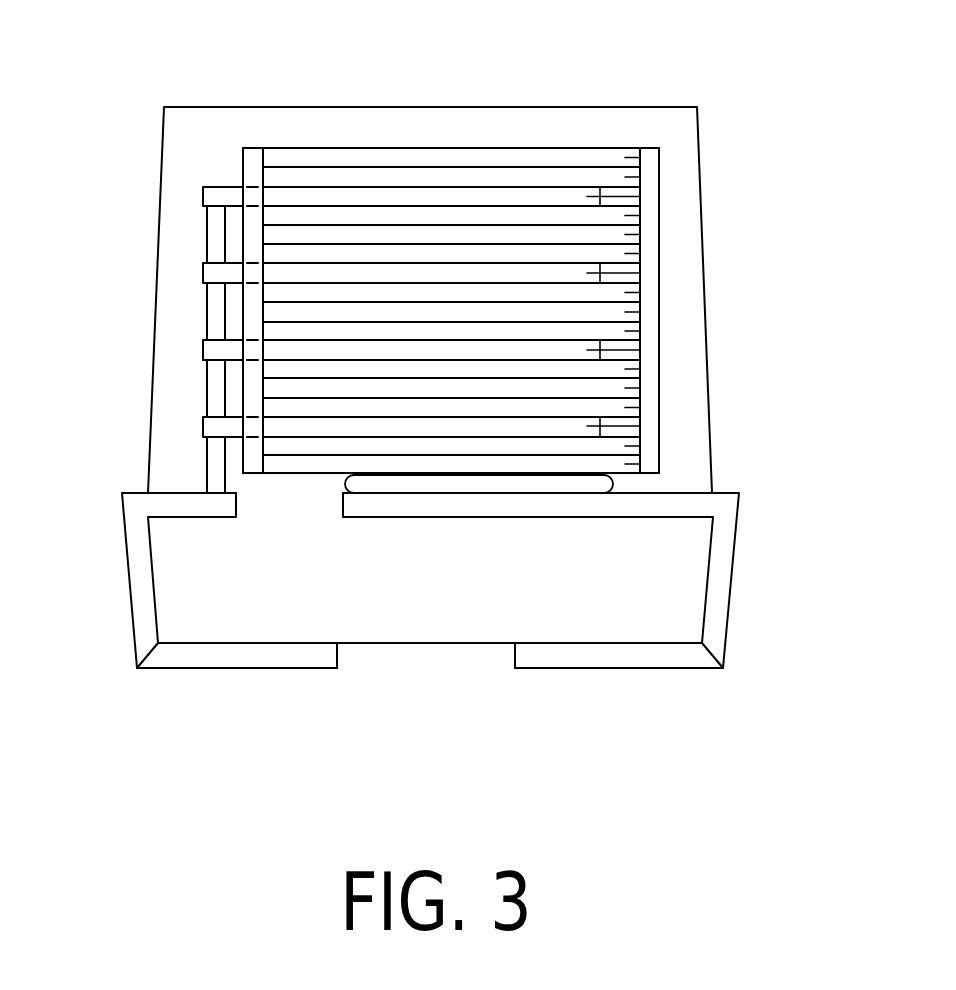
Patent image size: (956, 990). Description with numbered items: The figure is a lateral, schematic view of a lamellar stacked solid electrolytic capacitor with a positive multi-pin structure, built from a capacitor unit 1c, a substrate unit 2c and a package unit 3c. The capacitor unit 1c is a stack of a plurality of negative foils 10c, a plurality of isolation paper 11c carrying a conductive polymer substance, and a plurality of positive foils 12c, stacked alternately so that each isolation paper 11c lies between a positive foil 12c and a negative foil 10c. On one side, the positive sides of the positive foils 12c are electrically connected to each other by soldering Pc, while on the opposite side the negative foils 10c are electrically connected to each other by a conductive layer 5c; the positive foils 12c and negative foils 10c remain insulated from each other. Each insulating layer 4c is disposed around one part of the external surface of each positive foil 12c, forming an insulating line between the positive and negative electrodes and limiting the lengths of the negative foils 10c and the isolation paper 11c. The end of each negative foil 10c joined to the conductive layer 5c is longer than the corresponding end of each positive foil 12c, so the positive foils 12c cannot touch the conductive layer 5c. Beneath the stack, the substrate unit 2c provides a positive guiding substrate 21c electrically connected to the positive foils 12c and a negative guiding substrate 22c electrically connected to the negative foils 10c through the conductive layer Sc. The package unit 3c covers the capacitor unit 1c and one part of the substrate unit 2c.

The capacitor unit 1c is at (597, 147).
The substrate unit 2c is at (430, 645).
The positive guiding substrate 21c is at (305, 663).
The negative guiding substrate 22c is at (595, 691).
The package unit 3c is at (160, 140).
The insulating layer 4c is at (252, 145).
The conductive layer 5c is at (665, 434).
The negative foil 10c is at (659, 150).
The isolation paper 11c is at (640, 156).
The positive foil 12c is at (640, 197).
The soldering Pc is at (203, 230).
The conductive layer Sc is at (592, 483).